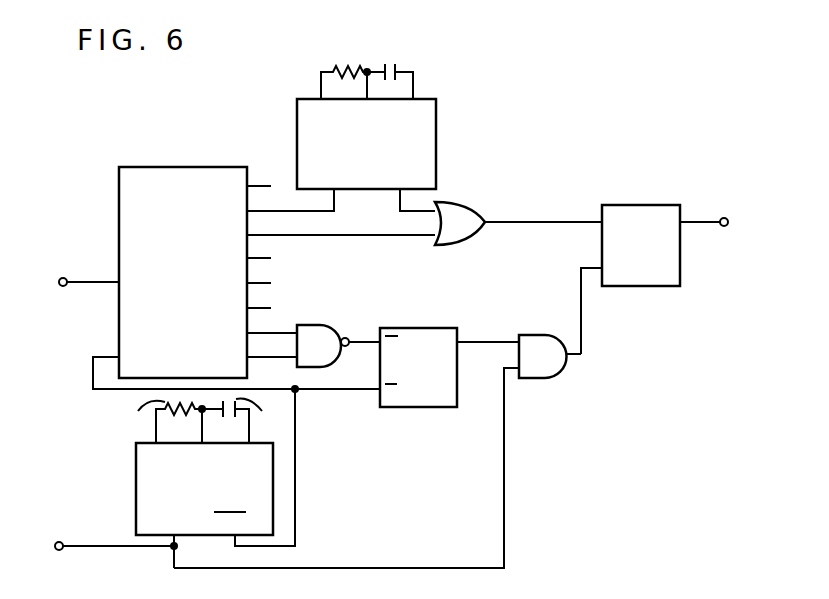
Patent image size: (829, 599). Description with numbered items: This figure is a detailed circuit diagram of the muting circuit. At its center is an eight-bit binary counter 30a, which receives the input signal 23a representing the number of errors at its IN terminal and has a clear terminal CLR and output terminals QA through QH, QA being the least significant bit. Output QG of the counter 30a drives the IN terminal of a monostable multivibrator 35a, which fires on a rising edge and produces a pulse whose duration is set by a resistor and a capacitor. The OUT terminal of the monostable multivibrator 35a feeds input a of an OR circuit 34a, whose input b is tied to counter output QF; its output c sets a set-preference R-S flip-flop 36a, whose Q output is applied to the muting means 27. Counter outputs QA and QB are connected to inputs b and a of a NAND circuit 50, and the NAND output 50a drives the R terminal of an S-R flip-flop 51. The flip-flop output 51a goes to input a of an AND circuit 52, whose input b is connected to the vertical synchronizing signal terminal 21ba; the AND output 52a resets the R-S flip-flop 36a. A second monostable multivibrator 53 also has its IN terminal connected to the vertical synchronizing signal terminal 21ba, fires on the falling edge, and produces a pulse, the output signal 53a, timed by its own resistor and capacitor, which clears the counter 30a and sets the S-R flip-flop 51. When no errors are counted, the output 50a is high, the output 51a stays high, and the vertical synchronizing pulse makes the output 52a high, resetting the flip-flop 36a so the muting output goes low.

The 8-bit binary counter 30a is at (193, 167).
The input signal 23a is at (62, 278).
The monostable multivibrator 35a is at (436, 125).
The OR circuit 34a is at (455, 203).
The set-preference R-S flip-flop 36a is at (650, 205).
The muting means 27 is at (728, 222).
The NAND circuit 50 is at (313, 325).
The output of the NAND circuit 50a is at (360, 342).
The S-R flip-flop 51 is at (432, 328).
The output of the S-R flip-flop 51a is at (487, 342).
The AND circuit 52 is at (538, 335).
The output of the AND circuit 52a is at (581, 323).
The monostable multivibrator 53 is at (136, 461).
The output signal of the monostable multivibrator 53a is at (295, 461).
The vertical synchronizing signal terminal 21ba is at (59, 542).